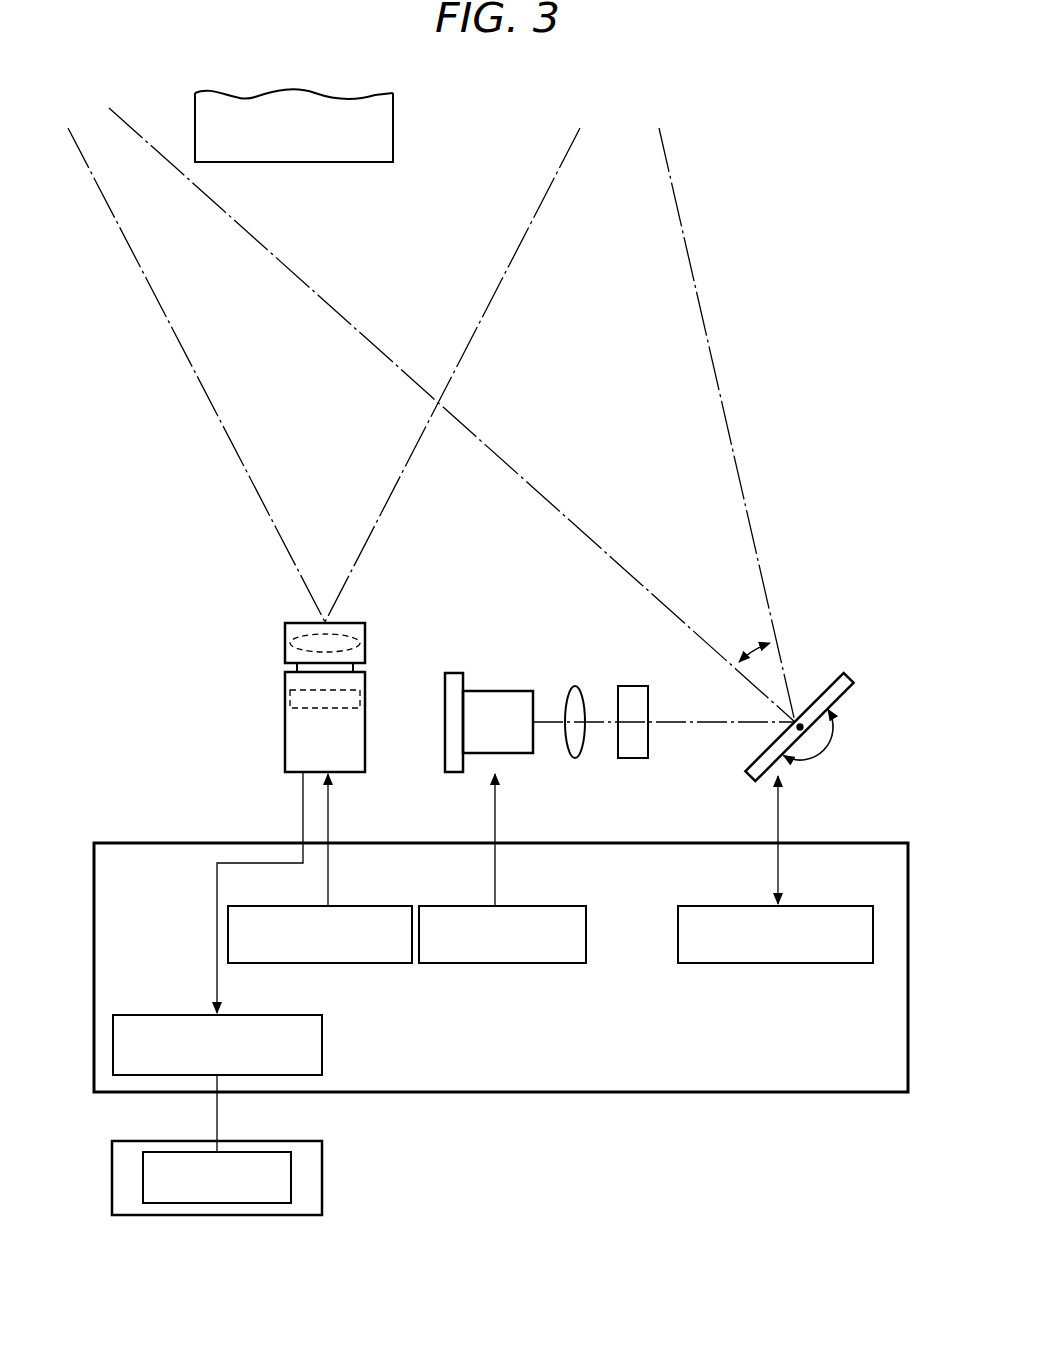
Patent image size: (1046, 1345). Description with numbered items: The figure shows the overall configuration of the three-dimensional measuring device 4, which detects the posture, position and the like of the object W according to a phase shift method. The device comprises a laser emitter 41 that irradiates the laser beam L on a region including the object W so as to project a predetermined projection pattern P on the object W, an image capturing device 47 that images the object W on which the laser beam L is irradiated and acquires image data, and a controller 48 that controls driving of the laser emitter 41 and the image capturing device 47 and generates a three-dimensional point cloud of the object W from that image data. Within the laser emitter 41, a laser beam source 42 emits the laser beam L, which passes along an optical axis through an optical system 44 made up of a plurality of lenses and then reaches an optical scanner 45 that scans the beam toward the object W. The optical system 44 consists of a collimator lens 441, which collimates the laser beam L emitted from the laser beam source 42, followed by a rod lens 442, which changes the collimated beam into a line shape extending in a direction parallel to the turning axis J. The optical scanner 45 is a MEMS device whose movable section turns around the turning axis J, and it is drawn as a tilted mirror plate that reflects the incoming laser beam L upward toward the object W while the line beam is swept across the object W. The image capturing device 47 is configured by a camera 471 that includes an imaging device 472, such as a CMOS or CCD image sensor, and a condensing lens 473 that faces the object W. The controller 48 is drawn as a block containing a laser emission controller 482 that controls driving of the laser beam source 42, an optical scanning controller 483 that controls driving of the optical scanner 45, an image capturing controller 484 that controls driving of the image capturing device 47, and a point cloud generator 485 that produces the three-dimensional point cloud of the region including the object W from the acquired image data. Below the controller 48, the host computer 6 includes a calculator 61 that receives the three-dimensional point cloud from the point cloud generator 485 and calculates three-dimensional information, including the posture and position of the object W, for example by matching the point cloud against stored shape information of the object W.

The three-dimensional measuring device 4 is at (848, 500).
The object W is at (385, 133).
The projection pattern P is at (318, 164).
The laser beam L is at (708, 340).
The laser emitter 41 is at (553, 632).
The laser beam source 42 is at (492, 706).
The optical system 44 is at (655, 672).
The collimator lens 441 is at (575, 745).
The rod lens 442 is at (632, 745).
The optical scanner 45 is at (853, 704).
The turning axis J is at (801, 720).
The image capturing device 47 is at (277, 694).
The camera 471 is at (296, 755).
The imaging device 472 is at (297, 698).
The condensing lens 473 is at (290, 640).
The controller 48 is at (793, 1094).
The laser emission controller 482 is at (548, 906).
The optical scanning controller 483 is at (845, 906).
The image capturing controller 484 is at (383, 906).
The point cloud generator 485 is at (162, 1015).
The host computer 6 is at (217, 1218).
The calculator 61 is at (270, 1204).